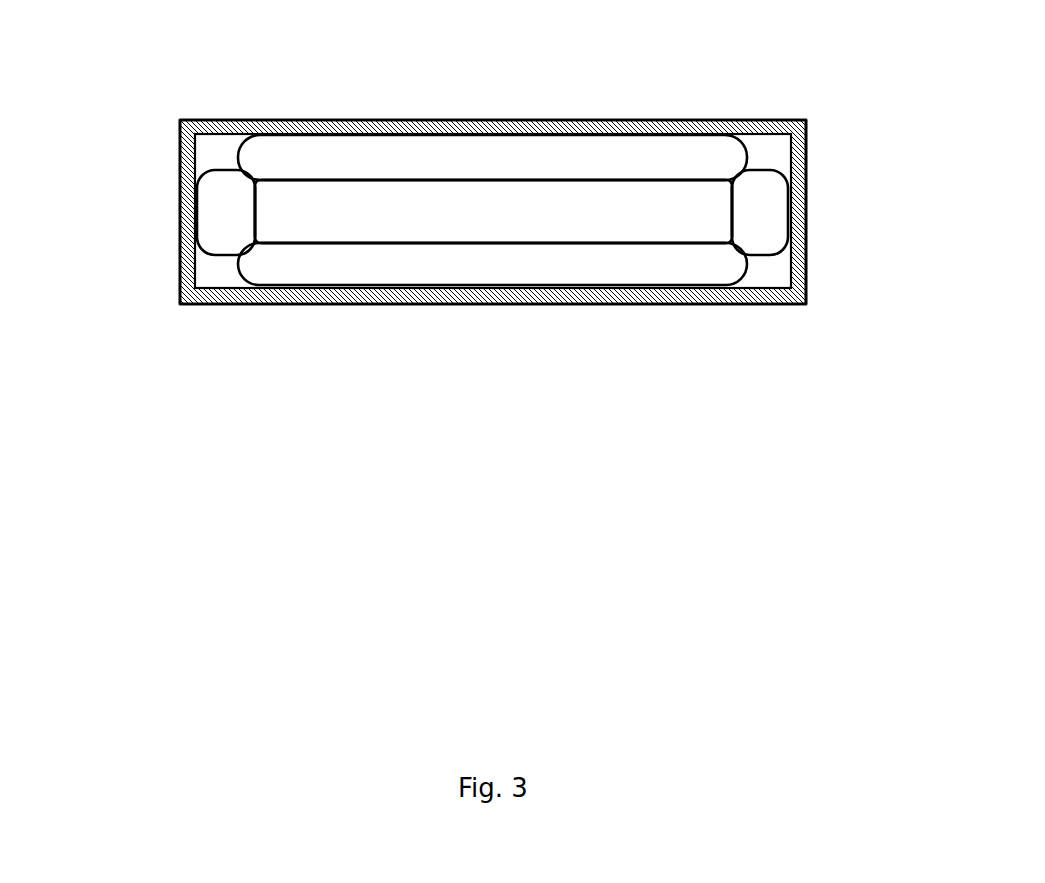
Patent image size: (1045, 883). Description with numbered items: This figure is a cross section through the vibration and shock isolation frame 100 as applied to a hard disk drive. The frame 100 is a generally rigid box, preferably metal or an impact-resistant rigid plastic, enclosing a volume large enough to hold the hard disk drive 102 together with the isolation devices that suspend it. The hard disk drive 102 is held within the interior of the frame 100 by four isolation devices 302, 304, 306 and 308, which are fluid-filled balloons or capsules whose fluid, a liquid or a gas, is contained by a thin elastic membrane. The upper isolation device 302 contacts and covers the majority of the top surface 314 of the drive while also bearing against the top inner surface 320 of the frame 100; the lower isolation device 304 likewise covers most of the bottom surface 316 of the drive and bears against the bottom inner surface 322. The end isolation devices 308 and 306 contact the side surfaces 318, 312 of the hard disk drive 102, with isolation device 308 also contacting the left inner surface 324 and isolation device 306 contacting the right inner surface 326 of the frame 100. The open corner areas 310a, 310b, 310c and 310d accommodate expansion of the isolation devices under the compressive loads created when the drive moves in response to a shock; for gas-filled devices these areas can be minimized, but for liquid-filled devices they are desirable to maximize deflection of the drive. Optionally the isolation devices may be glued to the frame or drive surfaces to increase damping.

The vibration and shock isolation frame 100 is at (700, 125).
The hard disk drive 102 is at (493, 211).
The isolation device 302 is at (492, 157).
The isolation device 304 is at (492, 264).
The isolation device 306 is at (223, 212).
The isolation device 308 is at (762, 213).
The expansion area 310a is at (773, 152).
The expansion area 310b is at (762, 272).
The expansion area 310c is at (208, 273).
The expansion area 310d is at (210, 145).
The right end surface 312 is at (728, 212).
The top surface 314 is at (523, 180).
The bottom surface 316 is at (315, 245).
The left end surface 318 is at (255, 212).
The top inner surface 320 is at (547, 133).
The bottom inner surface 322 is at (493, 285).
The left inner surface 324 is at (790, 167).
The right inner surface 326 is at (193, 170).